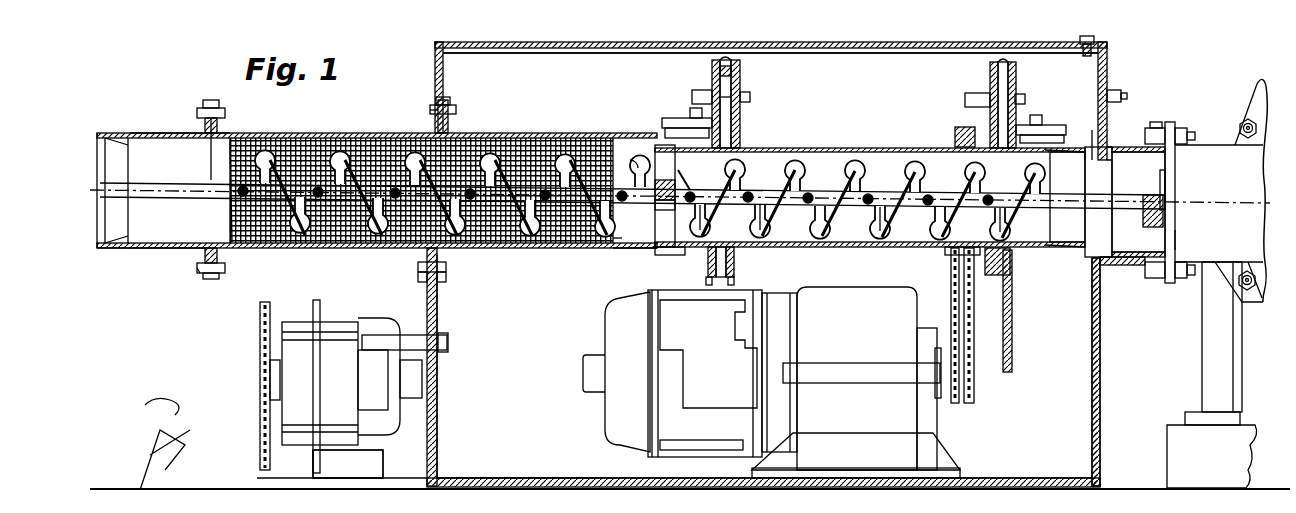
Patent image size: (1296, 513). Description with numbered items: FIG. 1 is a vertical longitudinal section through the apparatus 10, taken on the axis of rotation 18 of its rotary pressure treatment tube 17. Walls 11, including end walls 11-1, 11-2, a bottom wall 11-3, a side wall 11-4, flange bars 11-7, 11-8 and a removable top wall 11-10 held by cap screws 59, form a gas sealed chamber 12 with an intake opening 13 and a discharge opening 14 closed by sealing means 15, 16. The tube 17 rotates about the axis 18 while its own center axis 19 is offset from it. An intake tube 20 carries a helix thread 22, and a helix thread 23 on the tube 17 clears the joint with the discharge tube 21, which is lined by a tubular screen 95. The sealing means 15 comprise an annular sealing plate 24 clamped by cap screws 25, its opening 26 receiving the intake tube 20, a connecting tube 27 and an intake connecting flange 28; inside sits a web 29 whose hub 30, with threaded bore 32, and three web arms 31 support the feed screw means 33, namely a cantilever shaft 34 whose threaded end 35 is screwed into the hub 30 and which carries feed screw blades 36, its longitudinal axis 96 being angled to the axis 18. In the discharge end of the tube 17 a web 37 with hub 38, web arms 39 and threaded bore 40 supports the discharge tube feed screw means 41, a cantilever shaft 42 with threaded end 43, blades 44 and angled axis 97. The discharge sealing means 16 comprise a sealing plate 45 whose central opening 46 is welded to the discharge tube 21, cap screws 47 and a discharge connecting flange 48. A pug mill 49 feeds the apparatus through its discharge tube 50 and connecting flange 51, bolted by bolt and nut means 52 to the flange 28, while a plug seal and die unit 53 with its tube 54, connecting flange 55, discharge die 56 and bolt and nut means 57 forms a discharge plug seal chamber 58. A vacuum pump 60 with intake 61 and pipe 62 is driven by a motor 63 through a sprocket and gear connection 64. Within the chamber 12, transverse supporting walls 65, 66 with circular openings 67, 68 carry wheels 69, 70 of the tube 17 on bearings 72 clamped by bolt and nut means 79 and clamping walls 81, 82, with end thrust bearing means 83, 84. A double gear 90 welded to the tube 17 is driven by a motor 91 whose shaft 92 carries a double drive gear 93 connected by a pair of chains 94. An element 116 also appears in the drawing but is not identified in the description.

The apparatus 10 is at (424, 466).
The walls 11 is at (427, 300).
The end wall 11-1 is at (1092, 391).
The end wall 11-2 is at (437, 369).
The bottom wall 11-3 is at (530, 478).
The side wall 11-4 is at (764, 454).
The flange bar 11-7 is at (447, 55).
The flange bar 11-8 is at (841, 54).
The removable top wall 11-10 is at (915, 42).
The chamber 12 is at (518, 444).
The intake opening 13 is at (1092, 276).
The discharge opening 14 is at (440, 255).
The sealing means 15 is at (1128, 265).
The sealing means 16 is at (345, 248).
The pressure treatment tube 17 is at (866, 148).
The axis of rotation 18 is at (1214, 184).
The longitudinal center axis 19 is at (901, 188).
The intake tube 20 is at (1098, 202).
The discharge tube 21 is at (490, 148).
The helix thread 22 is at (1079, 137).
The helix thread 23 is at (690, 252).
The annular sealing plate 24 is at (1112, 148).
The cap screws 25 is at (1122, 94).
The opening 26 is at (1110, 242).
The web supporting and connecting tube 27 is at (1156, 128).
The intake connecting flange 28 is at (1195, 132).
The web 29 is at (1174, 234).
The hub 30 is at (1168, 178).
The radial web arms 31 is at (1158, 166).
The internally threaded bore 32 is at (1163, 204).
The feed screw means 33 is at (1024, 188).
The cantilever shaft 34 is at (1067, 197).
The support end 35 is at (1146, 202).
The feed screw blades 36 is at (771, 210).
The web 37 is at (654, 248).
The hub 38 is at (678, 183).
The radial web arms 39 is at (660, 148).
The internally threaded bore 40 is at (703, 206).
The discharge tube feed screw means 41 is at (630, 158).
The cantilever shaft 42 is at (622, 238).
The supporting end 43 is at (650, 218).
The feed screw blades 44 is at (560, 150).
The annular sealing plate 45 is at (430, 114).
The central opening 46 is at (438, 136).
The cap screws 47 is at (432, 102).
The discharge connecting flange 48 is at (218, 130).
The pug mill 49 is at (1200, 370).
The discharge tube 50 is at (1239, 265).
The connecting flange 51 is at (1170, 257).
The bolt and nut means 52 is at (1150, 275).
The plug seal and die unit 53 is at (160, 250).
The tube 54 is at (177, 133).
The annular connecting flange 55 is at (200, 276).
The annular discharge die 56 is at (112, 250).
The bolt and nut means 57 is at (218, 272).
The discharge plug seal chamber 58 is at (377, 190).
The cap screws 59 is at (1088, 42).
The vacuum pump 60 is at (280, 478).
The intake 61 is at (357, 353).
The pipe 62 is at (433, 338).
The motor 63 is at (381, 294).
The sprocket and gear connection 64 is at (260, 372).
The transverse supporting wall 65 is at (1012, 330).
The transverse supporting wall 66 is at (733, 282).
The central circular opening 67 is at (1010, 265).
The central circular opening 68 is at (736, 260).
The wheel 69 is at (973, 132).
The wheel 70 is at (740, 136).
The bearings 72 is at (740, 60).
The bolt and nut means 79 is at (750, 97).
The transverse clamping wall 81 is at (990, 72).
The clamping wall 82 is at (712, 62).
The end thrust bearing means 83 is at (1040, 125).
The end thrust bearing means 84 is at (695, 118).
The double gear 90 is at (950, 254).
The motor 91 is at (848, 288).
The shaft 92 is at (945, 378).
The double drive gear 93 is at (952, 403).
The chains 94 is at (951, 304).
The screen lining means 95 is at (230, 157).
The longitudinal axis 96 is at (1060, 224).
The longitudinal axis 97 is at (235, 190).
The upper housing wall 116 is at (1075, 101).